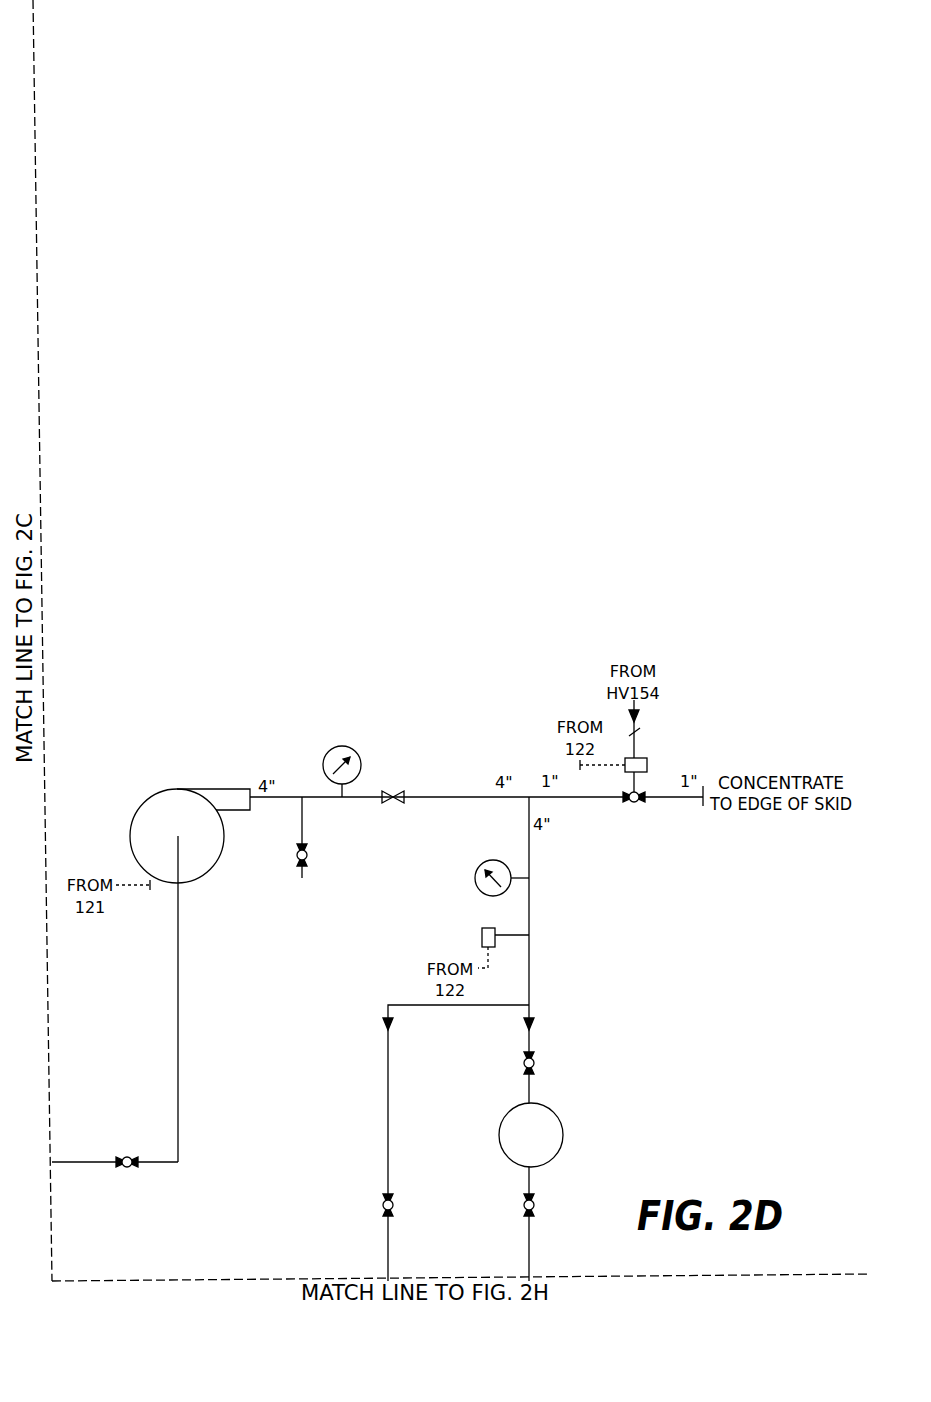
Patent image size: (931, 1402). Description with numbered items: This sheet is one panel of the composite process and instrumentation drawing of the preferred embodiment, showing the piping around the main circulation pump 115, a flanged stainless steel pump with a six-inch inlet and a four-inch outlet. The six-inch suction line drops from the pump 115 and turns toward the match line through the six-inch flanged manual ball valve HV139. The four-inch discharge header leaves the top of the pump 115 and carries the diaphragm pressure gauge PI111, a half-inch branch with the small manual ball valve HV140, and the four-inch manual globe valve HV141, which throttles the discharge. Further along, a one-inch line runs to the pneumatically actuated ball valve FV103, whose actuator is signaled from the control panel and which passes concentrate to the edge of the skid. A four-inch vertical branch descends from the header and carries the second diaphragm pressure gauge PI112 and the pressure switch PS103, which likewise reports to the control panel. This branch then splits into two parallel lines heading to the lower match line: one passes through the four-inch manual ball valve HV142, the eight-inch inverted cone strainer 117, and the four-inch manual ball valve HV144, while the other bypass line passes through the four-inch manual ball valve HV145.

The pump 115 is at (190, 950).
The inverted cone strainer 117 is at (507, 1135).
The manual ball valve HV139 is at (115, 1132).
The manual ball valve HV140 is at (290, 842).
The manual globe valve HV141 is at (393, 825).
The manual ball valve HV142 is at (498, 1063).
The manual ball valve HV144 is at (499, 1205).
The manual ball valve HV145 is at (359, 1207).
The pressure gauge with diaphragm PI111 is at (342, 744).
The pressure gauge with diaphragm PI112 is at (473, 875).
The pressure switch PS103 is at (476, 936).
The ball valve with pneumatic actuator FV103 is at (637, 779).